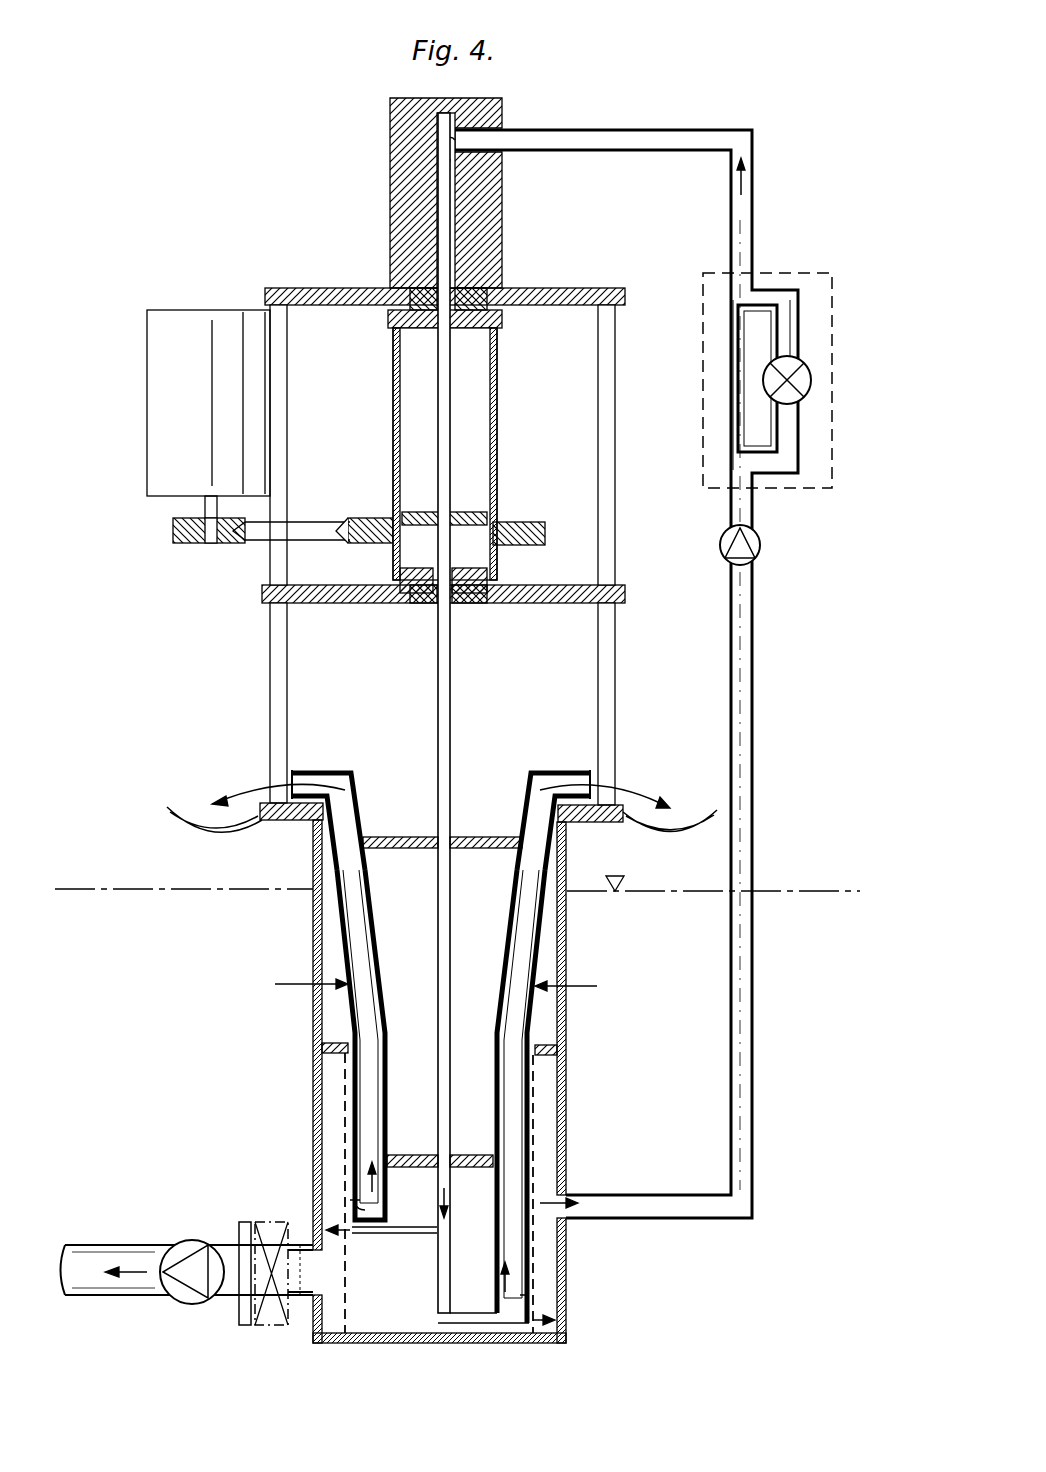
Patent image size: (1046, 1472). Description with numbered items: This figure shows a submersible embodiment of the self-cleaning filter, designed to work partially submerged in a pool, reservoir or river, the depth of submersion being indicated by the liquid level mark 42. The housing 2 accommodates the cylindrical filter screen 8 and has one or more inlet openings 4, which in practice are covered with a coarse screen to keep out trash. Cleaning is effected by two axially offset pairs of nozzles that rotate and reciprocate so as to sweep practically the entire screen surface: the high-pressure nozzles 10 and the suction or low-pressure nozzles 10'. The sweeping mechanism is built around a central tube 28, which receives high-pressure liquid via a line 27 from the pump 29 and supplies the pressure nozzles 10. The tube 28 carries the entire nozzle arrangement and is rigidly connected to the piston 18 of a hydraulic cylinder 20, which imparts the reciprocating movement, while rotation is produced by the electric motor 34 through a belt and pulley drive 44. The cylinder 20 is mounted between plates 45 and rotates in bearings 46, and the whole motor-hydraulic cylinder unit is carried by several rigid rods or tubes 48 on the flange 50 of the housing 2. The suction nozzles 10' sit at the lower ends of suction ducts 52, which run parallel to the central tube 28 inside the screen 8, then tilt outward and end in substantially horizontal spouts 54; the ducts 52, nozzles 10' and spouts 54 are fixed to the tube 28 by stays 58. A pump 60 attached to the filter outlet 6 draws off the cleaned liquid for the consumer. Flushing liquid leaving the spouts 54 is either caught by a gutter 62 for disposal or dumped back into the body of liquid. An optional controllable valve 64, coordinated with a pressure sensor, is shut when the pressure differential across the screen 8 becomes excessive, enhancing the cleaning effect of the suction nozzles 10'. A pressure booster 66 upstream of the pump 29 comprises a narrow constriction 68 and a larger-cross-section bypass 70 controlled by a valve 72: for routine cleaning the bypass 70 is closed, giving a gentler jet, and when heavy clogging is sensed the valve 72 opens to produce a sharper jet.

The housing 2 is at (312, 1075).
The inlet openings 4 is at (320, 993).
The filter outlet 6 is at (307, 1298).
The cylindrical filter screen 8 is at (345, 1128).
The high-pressure nozzles 10 is at (468, 1300).
The suction nozzles 10' is at (444, 1210).
The piston 18 is at (462, 510).
The hydraulic cylinder 20 is at (497, 385).
The line 27 is at (752, 738).
The central tube 28 is at (450, 680).
The pump 29 is at (760, 543).
The electric motor 34 is at (172, 384).
The liquid level mark 42 is at (620, 876).
The belt and pulley drive 44 is at (343, 500).
The plates 45 is at (563, 288).
The bearings 46 is at (415, 283).
The rigid rods or tubes 48 is at (275, 675).
The flange 50 is at (297, 822).
The suction ducts 52 is at (352, 932).
The spouts 54 is at (318, 770).
The stays 58 is at (393, 835).
The pump 60 is at (187, 1242).
The gutter 62 is at (190, 836).
The controllable valve 64 is at (258, 1222).
The pressure booster 66 is at (800, 272).
The constriction 68 is at (735, 380).
The bypass 70 is at (780, 327).
The valve 72 is at (800, 383).